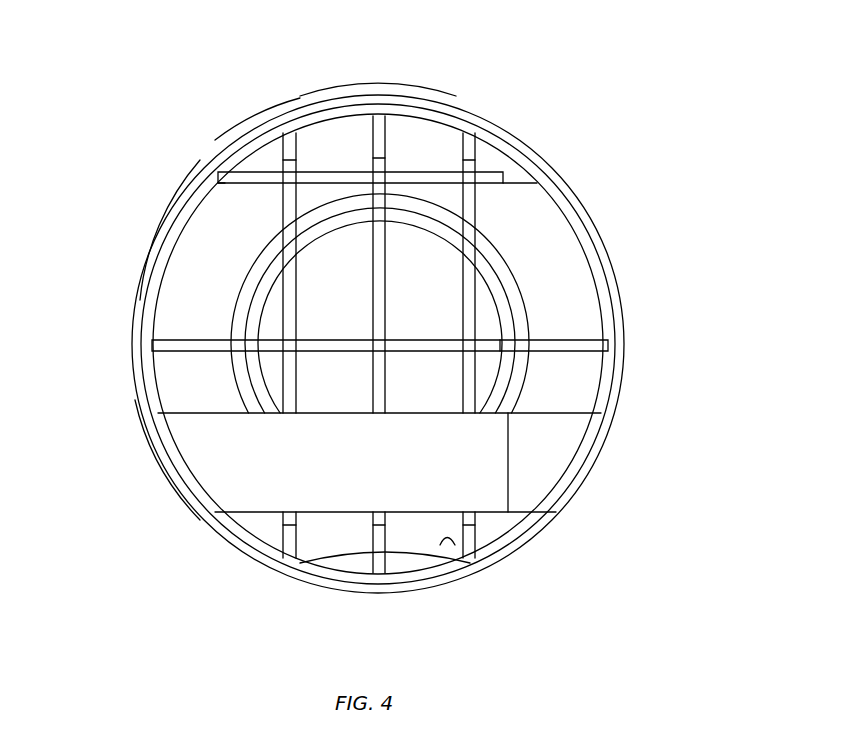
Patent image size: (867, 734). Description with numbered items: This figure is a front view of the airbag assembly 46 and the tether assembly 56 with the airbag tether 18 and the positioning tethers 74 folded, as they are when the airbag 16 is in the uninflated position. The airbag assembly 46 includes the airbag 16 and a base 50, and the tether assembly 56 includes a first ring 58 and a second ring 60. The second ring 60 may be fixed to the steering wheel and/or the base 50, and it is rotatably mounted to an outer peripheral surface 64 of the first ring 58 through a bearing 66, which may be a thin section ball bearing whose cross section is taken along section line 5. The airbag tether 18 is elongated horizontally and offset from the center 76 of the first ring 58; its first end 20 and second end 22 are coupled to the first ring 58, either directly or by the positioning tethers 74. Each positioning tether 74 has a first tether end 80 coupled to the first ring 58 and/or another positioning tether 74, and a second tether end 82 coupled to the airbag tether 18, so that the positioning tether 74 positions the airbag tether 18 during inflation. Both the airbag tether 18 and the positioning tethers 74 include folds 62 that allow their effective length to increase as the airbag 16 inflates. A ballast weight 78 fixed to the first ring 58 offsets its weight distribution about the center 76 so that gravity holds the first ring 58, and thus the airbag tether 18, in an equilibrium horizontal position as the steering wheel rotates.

The section line 5 is at (103, 232).
The airbag 16 is at (440, 270).
The airbag tether 18 is at (547, 437).
The first end 20 is at (152, 470).
The second end 22 is at (510, 480).
The airbag assembly 46 is at (530, 276).
The base 50 is at (532, 318).
The tether assembly 56 is at (536, 118).
The first ring 58 is at (340, 112).
The second ring 60 is at (357, 95).
The fold 62 is at (500, 178).
The outer peripheral surface 64 is at (250, 150).
The bearing 66 is at (158, 242).
The positioning tether 74 is at (460, 295).
The center 76 is at (378, 346).
The ballast weight 78 is at (440, 555).
The first tether end 80 is at (385, 130).
The second tether end 82 is at (466, 415).